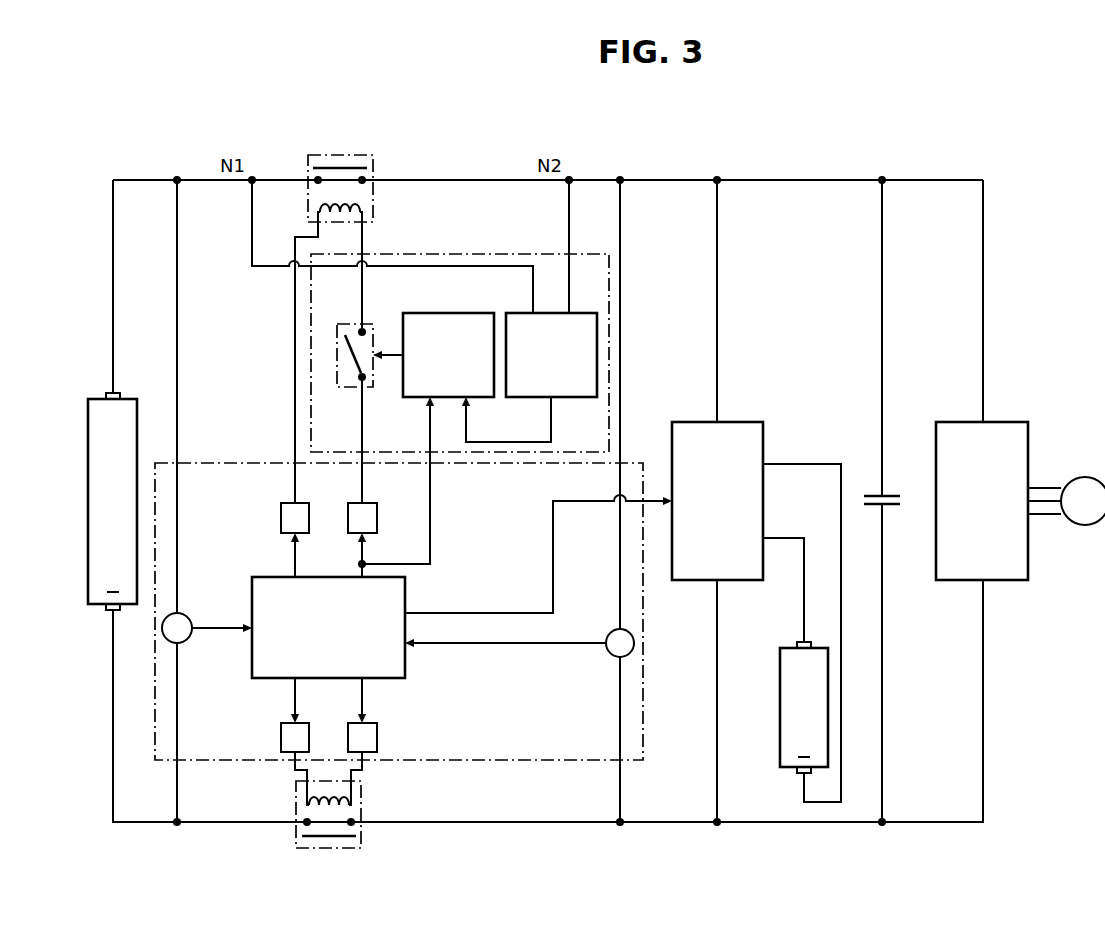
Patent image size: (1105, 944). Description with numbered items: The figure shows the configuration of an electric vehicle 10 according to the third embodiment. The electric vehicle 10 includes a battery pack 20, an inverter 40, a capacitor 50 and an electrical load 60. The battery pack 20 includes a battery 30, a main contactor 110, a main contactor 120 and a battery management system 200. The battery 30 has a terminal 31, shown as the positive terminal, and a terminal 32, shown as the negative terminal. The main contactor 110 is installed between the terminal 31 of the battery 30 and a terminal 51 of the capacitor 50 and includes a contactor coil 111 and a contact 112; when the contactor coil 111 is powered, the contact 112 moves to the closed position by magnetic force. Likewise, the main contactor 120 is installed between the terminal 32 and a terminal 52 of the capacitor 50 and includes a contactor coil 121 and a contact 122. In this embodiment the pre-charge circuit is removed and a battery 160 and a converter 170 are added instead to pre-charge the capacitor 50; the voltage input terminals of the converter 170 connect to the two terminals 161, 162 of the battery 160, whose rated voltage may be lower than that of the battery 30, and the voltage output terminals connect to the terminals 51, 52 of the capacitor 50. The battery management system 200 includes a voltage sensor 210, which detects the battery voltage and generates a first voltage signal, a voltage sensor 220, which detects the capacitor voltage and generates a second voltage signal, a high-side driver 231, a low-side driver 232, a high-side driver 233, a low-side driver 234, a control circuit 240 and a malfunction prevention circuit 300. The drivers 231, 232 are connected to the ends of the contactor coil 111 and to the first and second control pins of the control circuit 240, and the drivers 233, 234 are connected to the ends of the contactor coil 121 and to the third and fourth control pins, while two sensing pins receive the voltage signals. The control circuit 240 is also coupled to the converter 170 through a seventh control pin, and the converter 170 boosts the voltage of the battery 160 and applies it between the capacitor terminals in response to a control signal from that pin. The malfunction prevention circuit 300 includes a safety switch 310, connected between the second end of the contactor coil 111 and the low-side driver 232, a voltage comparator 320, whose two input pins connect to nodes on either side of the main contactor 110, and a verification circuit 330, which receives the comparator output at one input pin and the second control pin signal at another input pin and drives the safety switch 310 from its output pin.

The electric vehicle 10 is at (147, 59).
The battery pack 20 is at (207, 141).
The battery 30 is at (88, 500).
The terminal 31 is at (104, 395).
The terminal 32 is at (104, 608).
The inverter 40 is at (1008, 422).
The capacitor 50 is at (893, 497).
The terminal 51 is at (882, 177).
The terminal 52 is at (882, 826).
The electrical load 60 is at (1085, 477).
The main contactor 110 is at (358, 155).
The contactor coil 111 is at (360, 201).
The contact 112 is at (334, 162).
The main contactor 120 is at (350, 848).
The contactor coil 121 is at (351, 800).
The contact 122 is at (322, 838).
The battery 160 is at (780, 707).
The terminal 161 is at (797, 644).
The terminal 162 is at (797, 772).
The converter 170 is at (744, 422).
The battery management system 200 is at (226, 463).
The voltage sensor 210 is at (188, 640).
The voltage sensor 220 is at (611, 654).
The high-side driver 231 is at (285, 503).
The low-side driver 232 is at (352, 503).
The high-side driver 233 is at (281, 745).
The low-side driver 234 is at (377, 747).
The control circuit 240 is at (405, 668).
The malfunction prevention circuit 300 is at (504, 254).
The safety switch 310 is at (344, 326).
The voltage comparator 320 is at (583, 399).
The verification circuit 330 is at (443, 315).